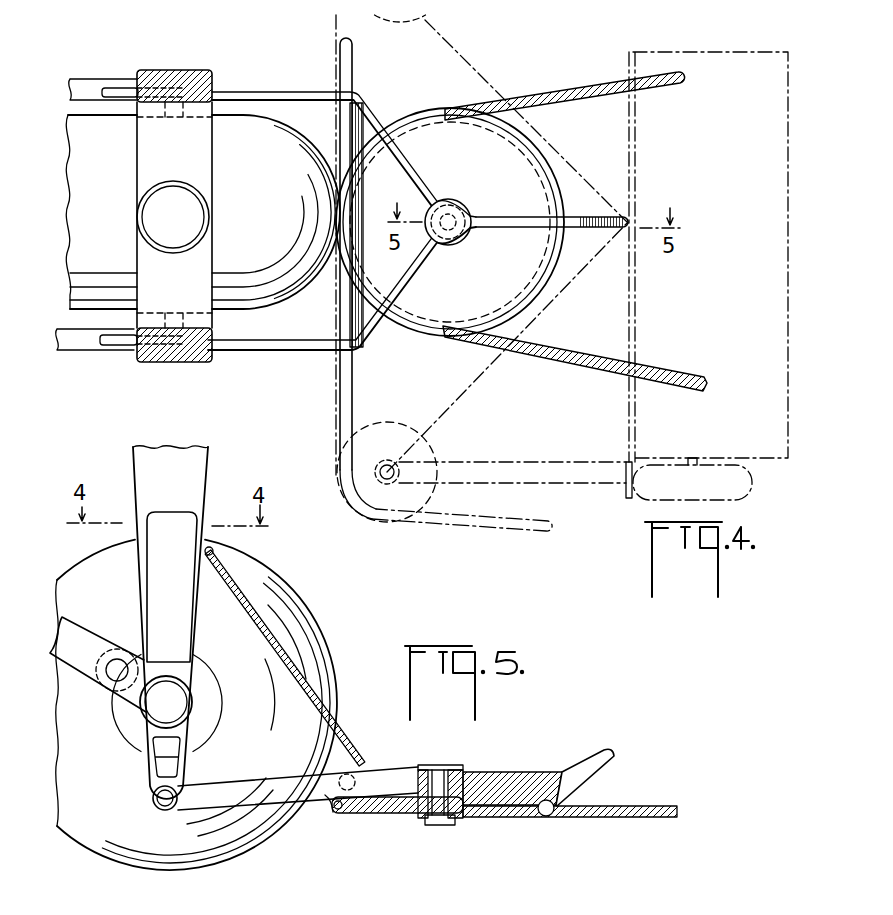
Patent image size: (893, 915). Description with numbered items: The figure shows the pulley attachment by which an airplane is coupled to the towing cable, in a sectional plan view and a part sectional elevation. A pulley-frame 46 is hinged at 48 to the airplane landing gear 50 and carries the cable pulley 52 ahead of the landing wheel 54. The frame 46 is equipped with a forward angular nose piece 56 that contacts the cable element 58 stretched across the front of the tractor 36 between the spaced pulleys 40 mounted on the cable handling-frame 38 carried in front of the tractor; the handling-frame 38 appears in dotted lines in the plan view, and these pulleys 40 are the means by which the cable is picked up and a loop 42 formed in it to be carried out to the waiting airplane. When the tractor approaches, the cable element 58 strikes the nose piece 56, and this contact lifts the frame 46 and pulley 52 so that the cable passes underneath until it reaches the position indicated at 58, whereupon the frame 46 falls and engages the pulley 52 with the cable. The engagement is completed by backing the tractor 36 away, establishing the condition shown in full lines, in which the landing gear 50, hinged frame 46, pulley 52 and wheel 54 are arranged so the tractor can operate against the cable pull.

In FIG. 4, the tractor 36 is at (765, 455).
In FIG. 4, the cable handling-frame 38 is at (502, 464).
In FIG. 4, the spaced pulleys 40 is at (424, 437).
In FIG. 4, the loop 42 is at (658, 84).
In FIG. 4, the pulley-frame 46 is at (308, 348).
In FIG. 5, the pulley-frame 46 is at (226, 786).
In FIG. 5, the hinge 48 is at (157, 803).
In FIG. 4, the airplane landing gear 50 is at (192, 70).
In FIG. 5, the airplane landing gear 50 is at (150, 743).
In FIG. 4, the cable pulley 52 is at (553, 258).
In FIG. 5, the cable pulley 52 is at (376, 815).
In FIG. 4, the landing wheel 54 is at (285, 303).
In FIG. 5, the landing wheel 54 is at (198, 868).
In FIG. 4, the forward angular nose piece 56 is at (594, 220).
In FIG. 5, the forward angular nose piece 56 is at (618, 762).
In FIG. 4, the cable element 58 is at (345, 394).
In FIG. 5, the cable element 58 is at (326, 804).